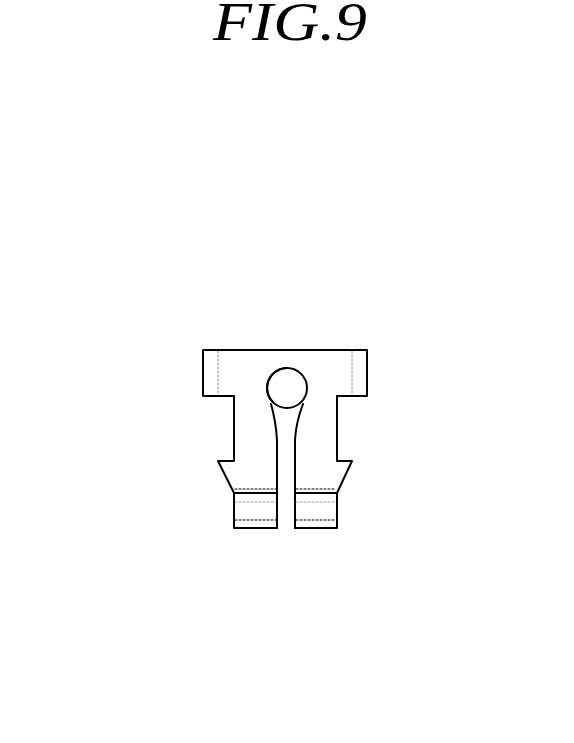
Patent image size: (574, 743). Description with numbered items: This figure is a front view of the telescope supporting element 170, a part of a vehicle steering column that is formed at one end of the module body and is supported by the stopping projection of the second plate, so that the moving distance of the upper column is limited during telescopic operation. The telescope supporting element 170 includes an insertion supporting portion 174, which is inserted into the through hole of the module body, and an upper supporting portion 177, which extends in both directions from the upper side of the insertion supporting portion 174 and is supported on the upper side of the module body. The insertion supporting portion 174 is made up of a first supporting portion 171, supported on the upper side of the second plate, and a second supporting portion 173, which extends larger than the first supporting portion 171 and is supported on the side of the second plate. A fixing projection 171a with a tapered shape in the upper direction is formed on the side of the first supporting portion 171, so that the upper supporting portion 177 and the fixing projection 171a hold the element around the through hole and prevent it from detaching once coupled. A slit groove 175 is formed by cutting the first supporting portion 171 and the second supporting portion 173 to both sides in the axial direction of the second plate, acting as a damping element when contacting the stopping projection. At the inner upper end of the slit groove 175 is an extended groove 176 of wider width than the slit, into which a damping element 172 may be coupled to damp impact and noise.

The telescope supporting element 170 is at (85, 202).
The first supporting portion 171 is at (338, 483).
The fixing projection 171a is at (218, 462).
The damping element 172 is at (284, 390).
The second supporting portion 173 is at (312, 510).
The insertion supporting portion 174 is at (348, 521).
The slit groove 175 is at (292, 459).
The extended groove 176 is at (273, 370).
The upper supporting portion 177 is at (365, 373).